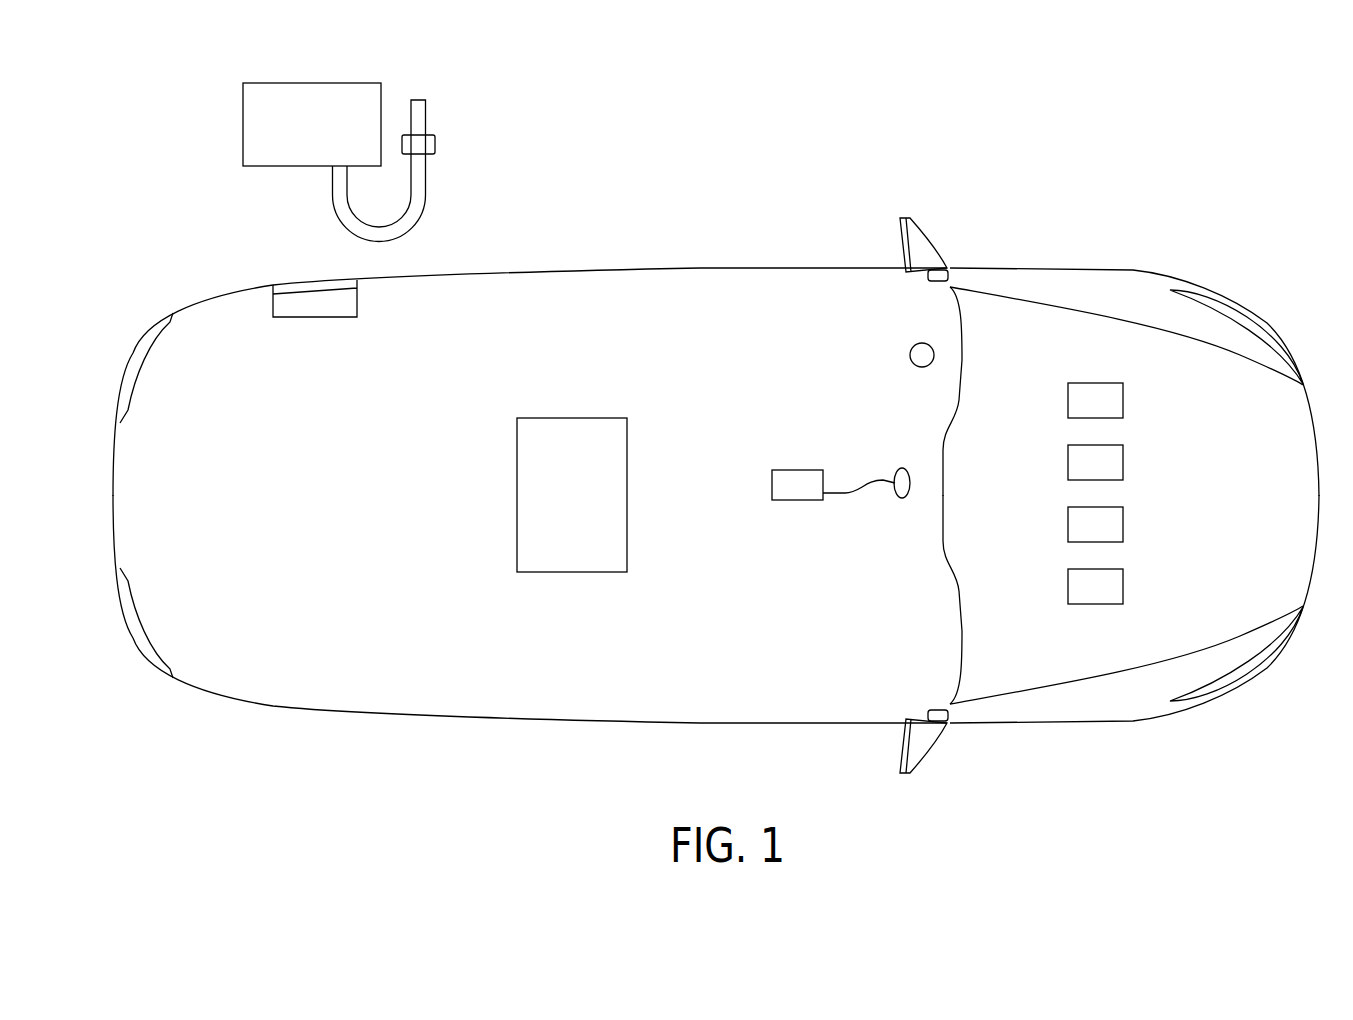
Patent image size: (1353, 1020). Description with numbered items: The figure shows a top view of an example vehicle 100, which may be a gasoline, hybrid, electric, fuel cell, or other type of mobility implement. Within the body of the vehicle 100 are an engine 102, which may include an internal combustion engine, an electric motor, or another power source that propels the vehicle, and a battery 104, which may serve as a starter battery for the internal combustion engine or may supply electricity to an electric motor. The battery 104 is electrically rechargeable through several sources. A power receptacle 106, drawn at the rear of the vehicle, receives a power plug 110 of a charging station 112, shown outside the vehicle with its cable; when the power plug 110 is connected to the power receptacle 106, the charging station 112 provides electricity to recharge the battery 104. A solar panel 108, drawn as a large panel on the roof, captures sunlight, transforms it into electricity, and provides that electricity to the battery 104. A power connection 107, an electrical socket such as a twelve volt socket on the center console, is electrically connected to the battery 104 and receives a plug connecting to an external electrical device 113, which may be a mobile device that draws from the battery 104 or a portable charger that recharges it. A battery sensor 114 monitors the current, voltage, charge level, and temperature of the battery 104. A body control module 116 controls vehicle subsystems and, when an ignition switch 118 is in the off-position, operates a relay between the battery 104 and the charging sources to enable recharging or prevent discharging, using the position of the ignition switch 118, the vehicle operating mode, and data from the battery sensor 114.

The vehicle 100 is at (1115, 208).
The engine 102 is at (1113, 413).
The battery 104 is at (1113, 475).
The power receptacle 106 is at (287, 268).
The power connection 107 is at (902, 500).
The solar panel 108 is at (590, 506).
The power plug 110 is at (437, 143).
The charging station 112 is at (243, 122).
The external electrical device 113 is at (800, 502).
The battery sensor 114 is at (1113, 537).
The body control module 116 is at (1113, 599).
The ignition switch 118 is at (910, 354).